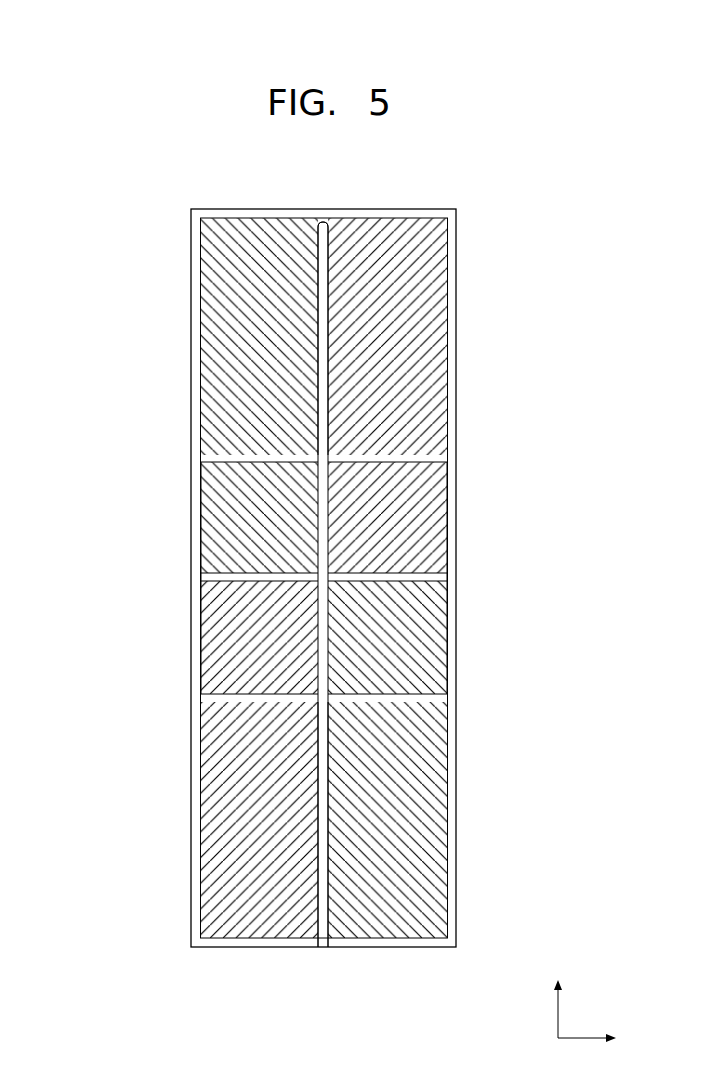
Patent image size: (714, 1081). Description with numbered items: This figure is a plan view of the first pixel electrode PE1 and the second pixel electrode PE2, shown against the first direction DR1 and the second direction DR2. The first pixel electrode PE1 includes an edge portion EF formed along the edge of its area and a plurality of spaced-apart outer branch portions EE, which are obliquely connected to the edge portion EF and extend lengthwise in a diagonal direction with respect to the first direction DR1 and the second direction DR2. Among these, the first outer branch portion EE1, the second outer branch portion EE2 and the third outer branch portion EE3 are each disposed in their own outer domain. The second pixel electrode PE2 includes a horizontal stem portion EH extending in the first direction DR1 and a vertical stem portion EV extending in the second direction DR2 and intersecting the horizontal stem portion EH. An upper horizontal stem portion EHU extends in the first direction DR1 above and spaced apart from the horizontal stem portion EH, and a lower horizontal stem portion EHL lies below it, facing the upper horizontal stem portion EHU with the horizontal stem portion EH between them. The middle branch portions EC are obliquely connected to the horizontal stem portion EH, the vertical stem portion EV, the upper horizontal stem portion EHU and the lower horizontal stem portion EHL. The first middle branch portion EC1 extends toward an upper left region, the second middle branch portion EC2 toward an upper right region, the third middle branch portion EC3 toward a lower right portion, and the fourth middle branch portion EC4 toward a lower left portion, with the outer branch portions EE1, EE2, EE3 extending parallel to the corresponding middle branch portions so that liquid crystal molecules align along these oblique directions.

The first pixel electrode PE1 is at (76, 860).
The edge portion EF is at (191, 247).
The outer branch portions EE is at (118, 315).
The first outer branch portion EE1 is at (201, 316).
The second outer branch portion EE2 is at (340, 343).
The third outer branch portion EE3 is at (201, 789).
The second pixel electrode PE2 is at (573, 428).
The vertical stem portion EV is at (325, 415).
The upper horizontal stem portion EHU is at (447, 466).
The horizontal stem portion EH is at (436, 580).
The lower horizontal stem portion EHL is at (447, 694).
The middle branch portions EC is at (530, 593).
The first middle branch portion EC1 is at (302, 571).
The second middle branch portion EC2 is at (343, 571).
The third middle branch portion EC3 is at (305, 663).
The fourth middle branch portion EC4 is at (330, 668).
The first direction DR1 is at (606, 1038).
The second direction DR2 is at (561, 997).